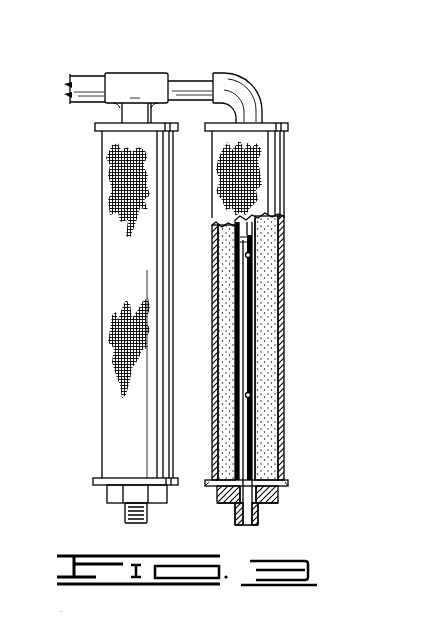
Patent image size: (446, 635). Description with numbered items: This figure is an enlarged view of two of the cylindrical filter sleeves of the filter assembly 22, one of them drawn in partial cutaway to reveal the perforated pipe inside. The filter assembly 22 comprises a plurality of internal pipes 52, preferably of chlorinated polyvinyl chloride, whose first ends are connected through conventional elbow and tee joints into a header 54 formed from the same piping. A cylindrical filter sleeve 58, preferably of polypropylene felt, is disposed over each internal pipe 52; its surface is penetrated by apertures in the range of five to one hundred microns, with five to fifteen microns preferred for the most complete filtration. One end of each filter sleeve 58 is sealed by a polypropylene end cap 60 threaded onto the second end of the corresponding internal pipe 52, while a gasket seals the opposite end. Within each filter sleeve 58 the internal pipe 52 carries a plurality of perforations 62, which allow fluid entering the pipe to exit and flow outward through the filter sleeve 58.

The filter assembly 22 is at (212, 62).
The internal pipe 52 is at (250, 232).
The header 54 is at (84, 82).
The cylindrical filter sleeve 58 is at (103, 204).
The end cap 60 is at (110, 493).
The perforations 62 is at (250, 255).